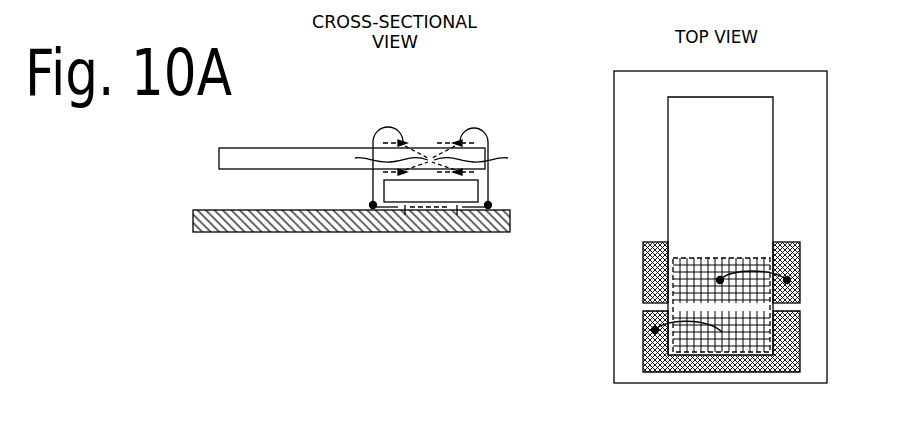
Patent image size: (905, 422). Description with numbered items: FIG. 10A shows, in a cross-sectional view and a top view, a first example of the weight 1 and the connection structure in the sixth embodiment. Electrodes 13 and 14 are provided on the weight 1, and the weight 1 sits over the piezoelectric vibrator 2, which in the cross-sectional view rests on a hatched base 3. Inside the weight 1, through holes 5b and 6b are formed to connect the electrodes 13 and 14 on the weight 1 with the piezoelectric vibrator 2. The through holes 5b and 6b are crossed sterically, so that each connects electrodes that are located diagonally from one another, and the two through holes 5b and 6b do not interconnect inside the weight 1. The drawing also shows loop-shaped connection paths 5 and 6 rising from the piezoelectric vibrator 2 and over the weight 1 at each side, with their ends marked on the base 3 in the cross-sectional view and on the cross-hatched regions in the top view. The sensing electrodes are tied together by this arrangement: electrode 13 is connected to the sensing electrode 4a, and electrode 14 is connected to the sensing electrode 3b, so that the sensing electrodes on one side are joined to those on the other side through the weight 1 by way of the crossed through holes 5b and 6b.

The weight 1 is at (278, 149).
The piezoelectric vibrator 2 is at (478, 186).
The base 3 is at (270, 232).
The sensing electrode 3b is at (405, 216).
The sensing electrode 4a is at (642, 352).
The first wiring loop 5 is at (384, 124).
The second wiring loop 6 is at (480, 124).
The through hole 5b is at (482, 158).
The through hole 6b is at (379, 158).
The electrode 13 is at (440, 142).
The electrode 14 is at (420, 142).